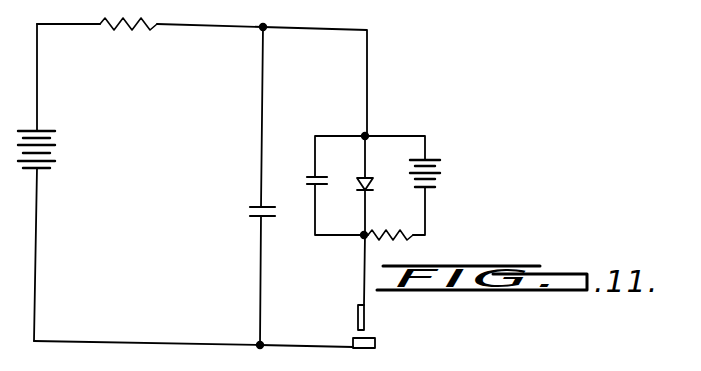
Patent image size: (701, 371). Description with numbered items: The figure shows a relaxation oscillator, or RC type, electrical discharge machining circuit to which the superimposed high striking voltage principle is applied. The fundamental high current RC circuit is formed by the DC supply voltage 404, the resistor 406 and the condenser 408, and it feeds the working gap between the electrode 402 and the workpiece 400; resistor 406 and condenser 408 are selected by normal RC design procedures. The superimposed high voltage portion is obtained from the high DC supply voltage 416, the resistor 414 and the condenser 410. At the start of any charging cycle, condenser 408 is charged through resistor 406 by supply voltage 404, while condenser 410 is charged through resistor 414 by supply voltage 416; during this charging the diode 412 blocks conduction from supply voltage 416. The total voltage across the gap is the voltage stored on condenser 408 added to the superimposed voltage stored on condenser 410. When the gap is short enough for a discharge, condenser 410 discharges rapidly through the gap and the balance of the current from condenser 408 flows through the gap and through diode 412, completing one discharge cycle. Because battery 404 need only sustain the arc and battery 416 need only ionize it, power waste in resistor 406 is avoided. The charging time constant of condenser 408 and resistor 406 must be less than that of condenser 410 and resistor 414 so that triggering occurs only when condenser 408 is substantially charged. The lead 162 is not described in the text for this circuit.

The conductor 162 is at (193, 356).
The workpiece 400 is at (375, 343).
The electrode 402 is at (364, 317).
The DC supply voltage 404 is at (52, 153).
The resistor 406 is at (128, 29).
The condenser 408 is at (248, 213).
The condenser 410 is at (308, 182).
The diode 412 is at (372, 182).
The resistor 414 is at (388, 238).
The high DC supply voltage 416 is at (437, 172).